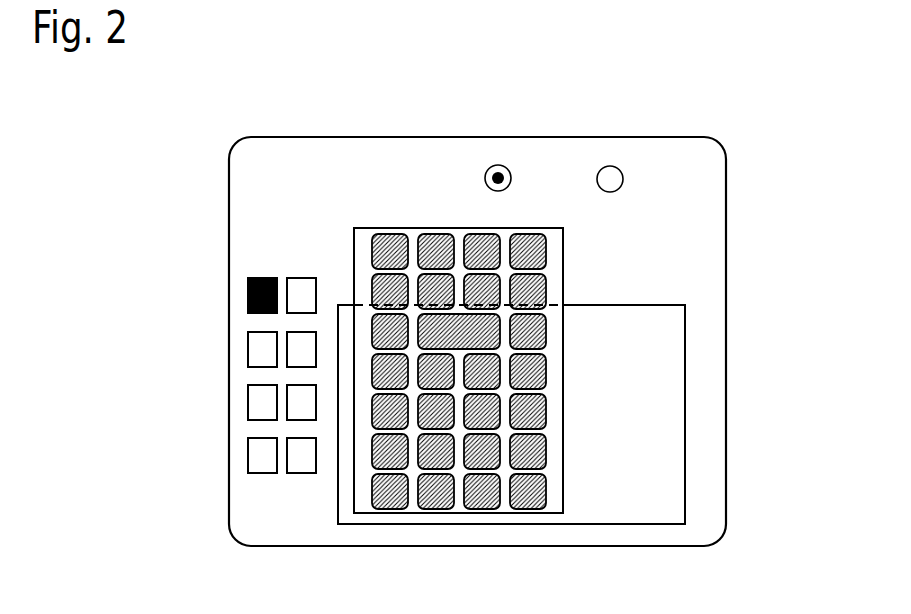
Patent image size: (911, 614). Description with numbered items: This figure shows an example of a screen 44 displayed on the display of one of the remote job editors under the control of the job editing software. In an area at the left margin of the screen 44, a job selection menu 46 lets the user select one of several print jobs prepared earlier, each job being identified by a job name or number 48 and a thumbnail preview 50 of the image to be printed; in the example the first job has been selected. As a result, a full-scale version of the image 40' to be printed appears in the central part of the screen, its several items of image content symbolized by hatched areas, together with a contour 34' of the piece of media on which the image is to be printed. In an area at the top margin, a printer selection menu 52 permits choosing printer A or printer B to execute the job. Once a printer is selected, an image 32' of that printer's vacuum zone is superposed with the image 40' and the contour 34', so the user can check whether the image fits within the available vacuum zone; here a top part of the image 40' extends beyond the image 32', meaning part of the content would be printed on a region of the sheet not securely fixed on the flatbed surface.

The screen 44 is at (203, 208).
The job selection menu 46 is at (286, 164).
The printer selection menu 52 is at (705, 177).
The image to be printed 40' is at (506, 371).
The contour of the piece of media 34' is at (500, 370).
The image of the vacuum zone 32' is at (567, 414).
The preview 50 is at (257, 457).
The job name or number 48 is at (303, 473).